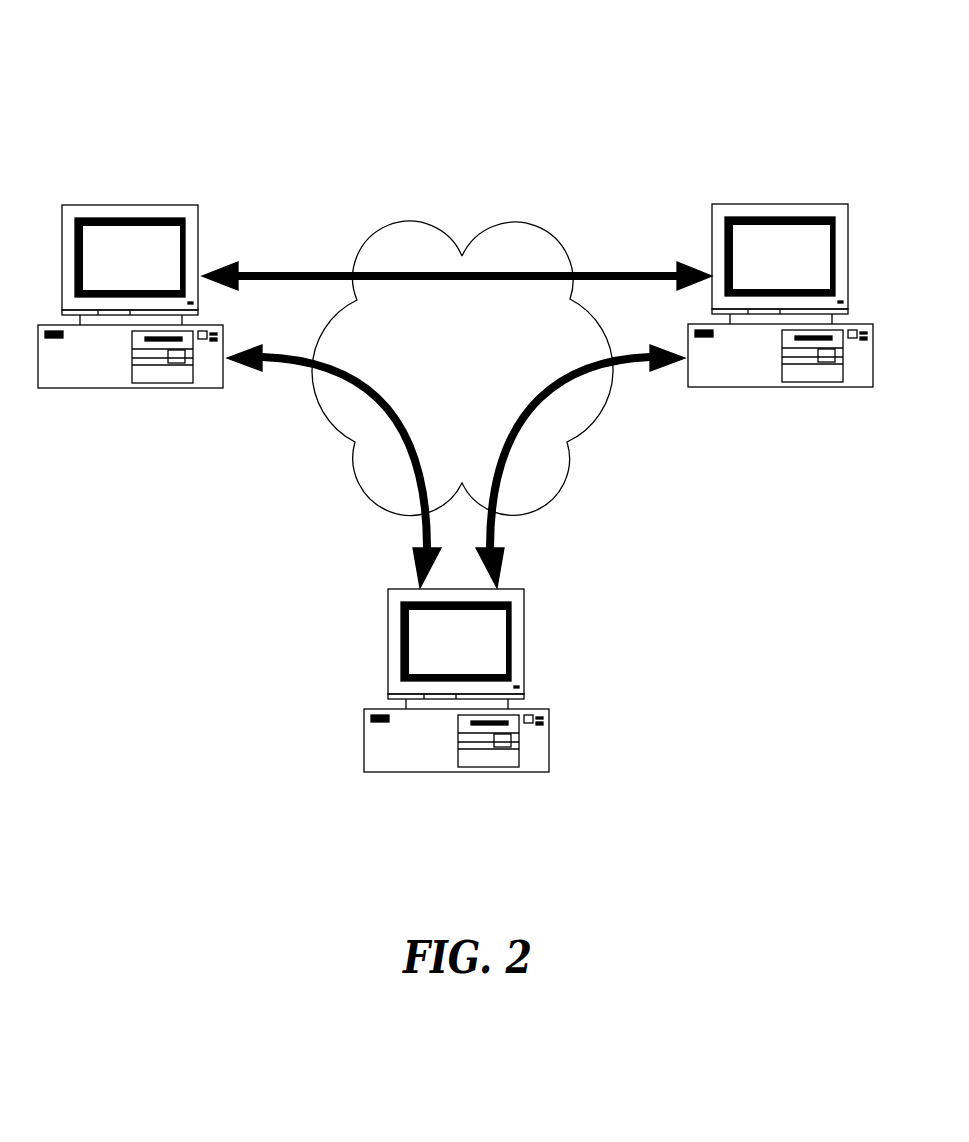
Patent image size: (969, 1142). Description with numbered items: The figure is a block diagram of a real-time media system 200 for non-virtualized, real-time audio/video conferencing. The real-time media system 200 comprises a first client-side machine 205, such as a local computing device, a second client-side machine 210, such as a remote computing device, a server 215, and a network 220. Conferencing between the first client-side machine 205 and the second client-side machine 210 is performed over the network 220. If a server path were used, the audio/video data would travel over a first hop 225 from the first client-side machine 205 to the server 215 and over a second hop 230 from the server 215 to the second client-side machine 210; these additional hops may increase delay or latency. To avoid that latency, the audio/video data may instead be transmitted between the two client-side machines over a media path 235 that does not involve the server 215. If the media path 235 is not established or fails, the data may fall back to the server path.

The real-time media system 200 is at (488, 42).
The first client-side machine 205 is at (127, 202).
The second client-side machine 210 is at (787, 203).
The server 215 is at (547, 743).
The network 220 is at (507, 223).
The first hop 225 is at (412, 535).
The second hop 230 is at (512, 535).
The media path 235 is at (588, 273).